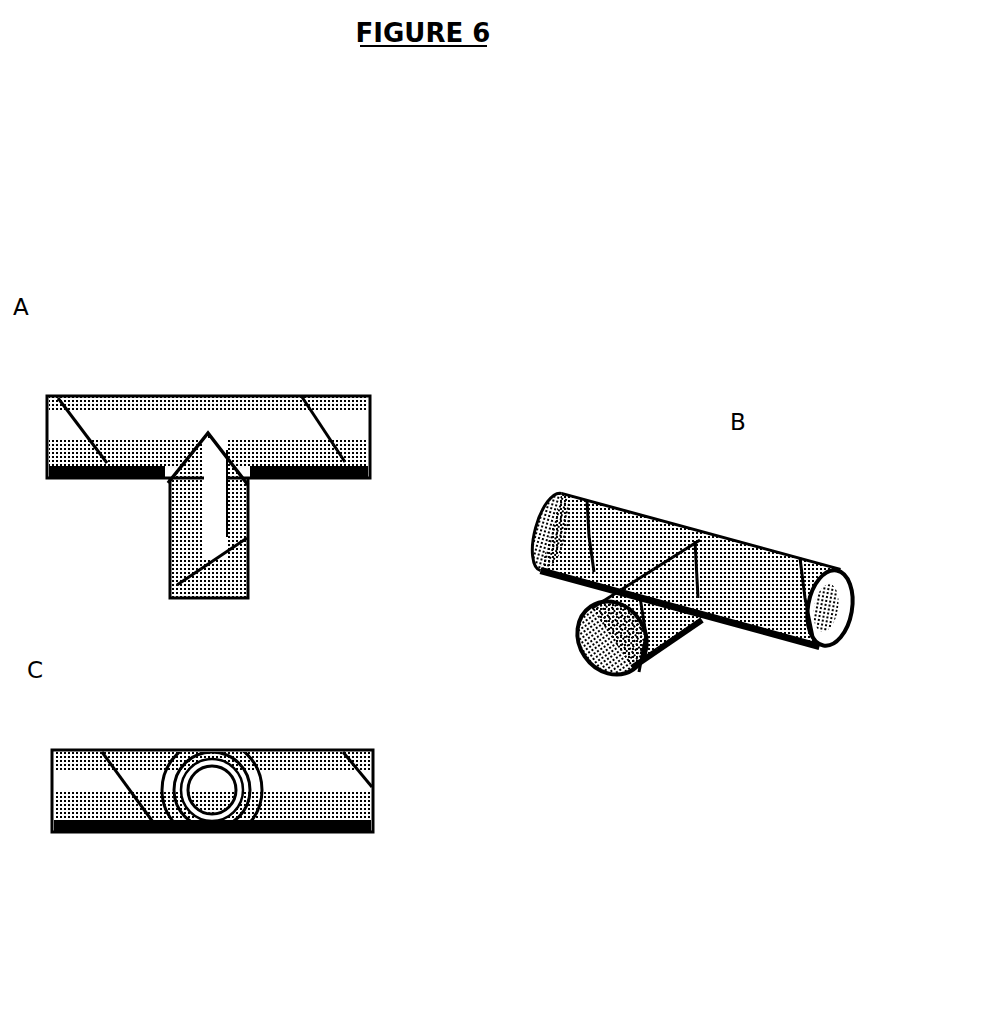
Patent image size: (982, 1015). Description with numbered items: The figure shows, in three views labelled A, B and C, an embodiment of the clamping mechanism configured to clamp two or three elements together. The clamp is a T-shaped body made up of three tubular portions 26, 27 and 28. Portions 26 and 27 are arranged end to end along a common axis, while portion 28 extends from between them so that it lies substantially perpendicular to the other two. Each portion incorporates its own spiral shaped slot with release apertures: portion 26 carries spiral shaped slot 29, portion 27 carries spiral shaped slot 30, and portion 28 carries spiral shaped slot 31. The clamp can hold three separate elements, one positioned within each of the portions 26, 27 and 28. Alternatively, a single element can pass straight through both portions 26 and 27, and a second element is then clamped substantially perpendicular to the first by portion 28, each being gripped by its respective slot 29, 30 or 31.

The clamp portion 26 is at (123, 412).
The clamp portion 27 is at (268, 413).
The clamp portion 28 is at (177, 507).
The spiral shaped slot 29 is at (63, 395).
The spiral shaped slot 30 is at (315, 402).
The spiral shaped slot 31 is at (245, 550).